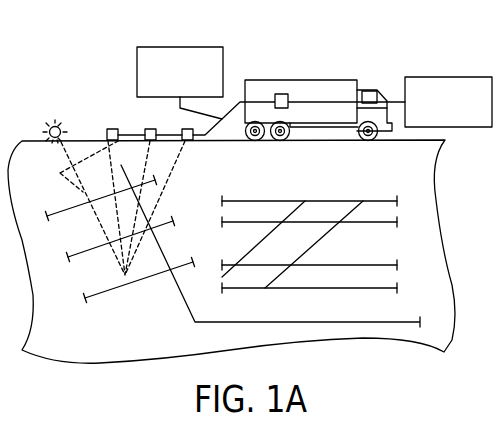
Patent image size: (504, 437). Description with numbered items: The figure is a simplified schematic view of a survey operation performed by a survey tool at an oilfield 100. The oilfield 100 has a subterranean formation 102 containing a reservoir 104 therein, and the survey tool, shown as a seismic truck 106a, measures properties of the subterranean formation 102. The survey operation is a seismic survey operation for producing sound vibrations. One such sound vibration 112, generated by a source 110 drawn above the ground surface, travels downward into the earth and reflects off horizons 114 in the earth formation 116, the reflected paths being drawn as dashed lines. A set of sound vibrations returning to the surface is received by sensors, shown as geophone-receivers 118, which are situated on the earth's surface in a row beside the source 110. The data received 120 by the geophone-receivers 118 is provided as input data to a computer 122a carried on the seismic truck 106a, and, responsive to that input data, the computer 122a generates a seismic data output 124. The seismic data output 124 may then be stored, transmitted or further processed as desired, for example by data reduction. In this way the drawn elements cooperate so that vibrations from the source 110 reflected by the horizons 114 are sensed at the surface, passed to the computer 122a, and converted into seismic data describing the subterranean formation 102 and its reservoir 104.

The oilfield 100 is at (396, 58).
The subterranean formation 102 is at (317, 224).
The reservoir 104 is at (376, 256).
The seismic truck 106a is at (337, 80).
The source 110 is at (55, 126).
The sound vibration 112 is at (60, 173).
The horizons 114 is at (61, 217).
The earth formation 116 is at (184, 299).
The geophone-receivers 118 is at (187, 128).
The data received 120 is at (174, 47).
The computer 122a is at (283, 93).
The seismic data output 124 is at (449, 77).